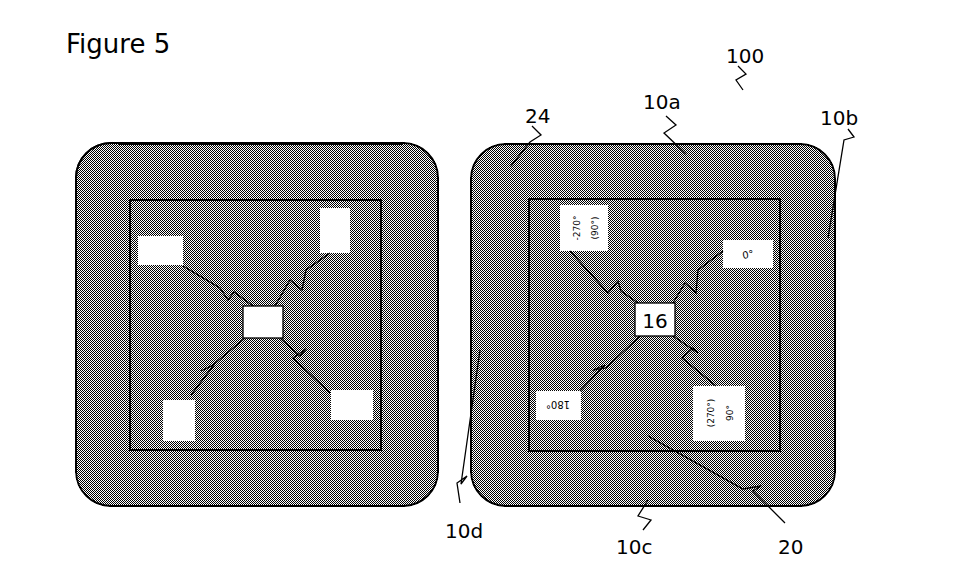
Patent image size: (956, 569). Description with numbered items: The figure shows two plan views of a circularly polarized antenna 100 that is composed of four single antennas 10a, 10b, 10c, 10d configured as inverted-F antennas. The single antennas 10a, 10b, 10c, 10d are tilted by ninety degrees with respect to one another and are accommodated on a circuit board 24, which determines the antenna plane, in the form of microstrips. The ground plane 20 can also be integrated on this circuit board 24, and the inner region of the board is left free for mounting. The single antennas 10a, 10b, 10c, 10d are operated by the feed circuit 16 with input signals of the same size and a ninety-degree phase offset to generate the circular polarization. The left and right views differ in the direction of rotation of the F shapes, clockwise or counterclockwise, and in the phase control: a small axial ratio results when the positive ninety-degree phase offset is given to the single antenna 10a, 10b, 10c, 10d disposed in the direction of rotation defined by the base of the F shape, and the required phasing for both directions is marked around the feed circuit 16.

The circularly polarized antenna 100 is at (257, 275).
The single antenna 10a is at (260, 129).
The single antenna 10b is at (451, 286).
The single antenna 10c is at (258, 532).
The single antenna 10d is at (51, 325).
The feed circuit 16 is at (255, 324).
The ground plane 20 is at (253, 379).
The circuit board 24 is at (105, 155).